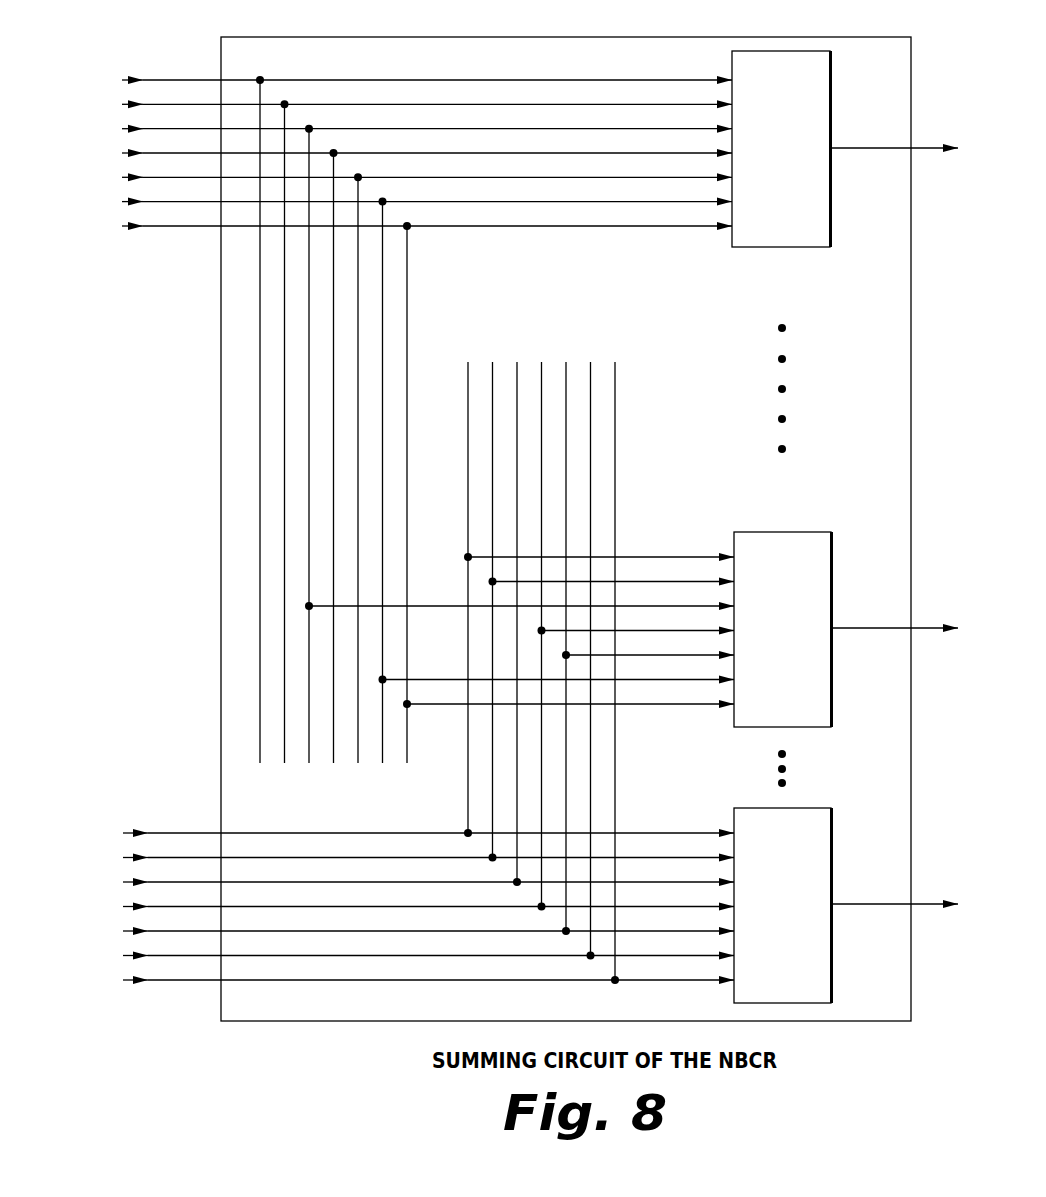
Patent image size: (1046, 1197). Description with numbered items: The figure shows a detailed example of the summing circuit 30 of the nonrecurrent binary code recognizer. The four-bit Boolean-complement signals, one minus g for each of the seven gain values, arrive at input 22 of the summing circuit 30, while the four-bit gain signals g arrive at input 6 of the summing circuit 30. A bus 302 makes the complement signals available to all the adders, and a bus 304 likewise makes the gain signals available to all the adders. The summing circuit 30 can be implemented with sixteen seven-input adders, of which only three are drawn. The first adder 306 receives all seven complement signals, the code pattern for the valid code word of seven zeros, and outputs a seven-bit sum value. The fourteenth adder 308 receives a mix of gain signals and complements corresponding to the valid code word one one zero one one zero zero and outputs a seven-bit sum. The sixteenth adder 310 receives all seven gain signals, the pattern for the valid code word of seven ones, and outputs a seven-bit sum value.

The input 6 is at (178, 820).
The input 22 is at (177, 63).
The summing circuit 30 is at (567, 37).
The bus 302 is at (412, 768).
The bus 304 is at (618, 352).
The Adder No. 1 306 is at (831, 95).
The Adder No. 14 308 is at (832, 575).
The Adder No. 16 310 is at (832, 850).